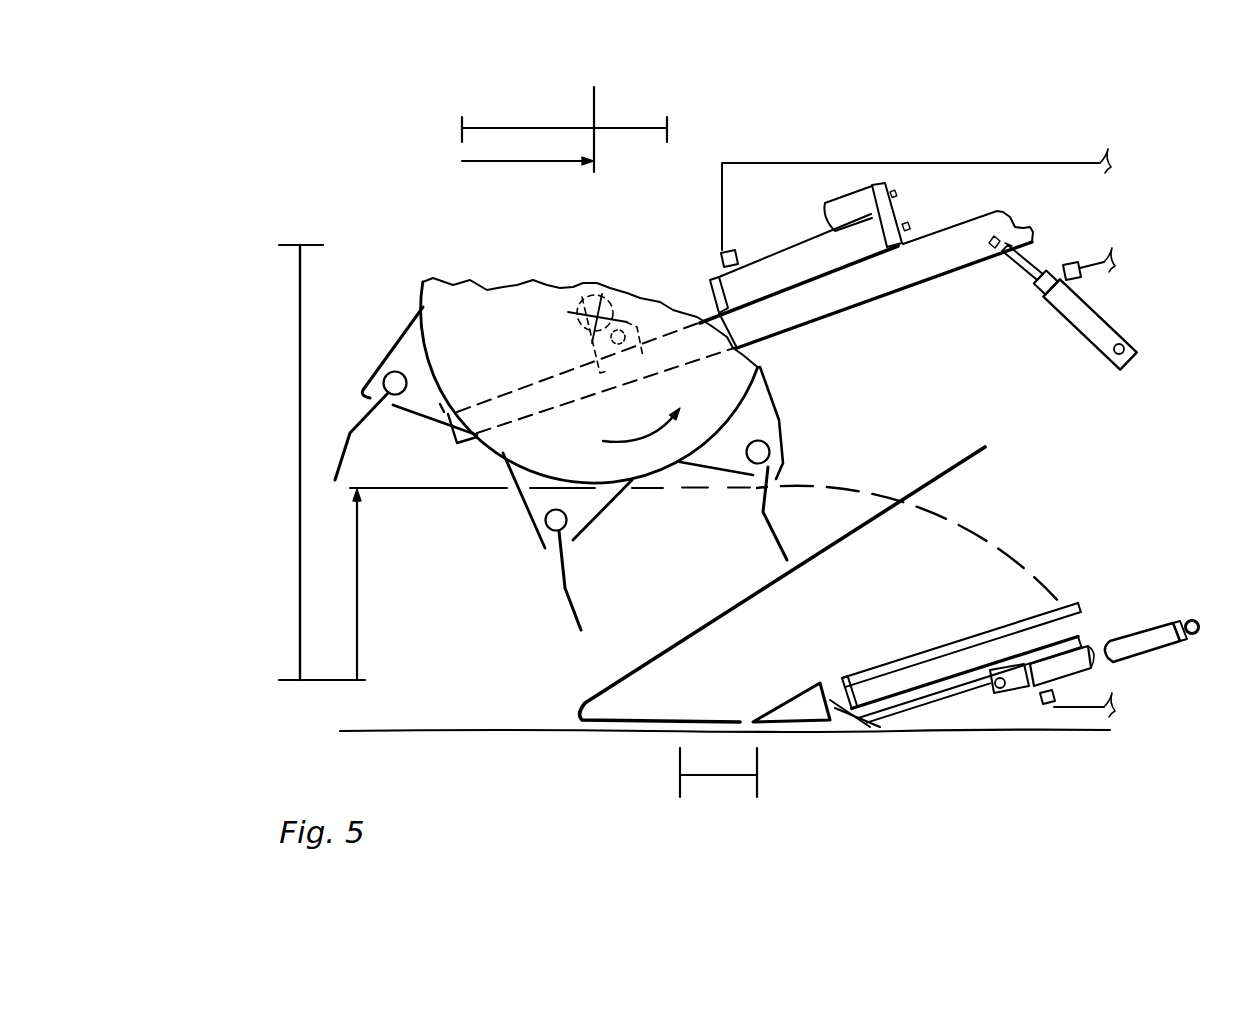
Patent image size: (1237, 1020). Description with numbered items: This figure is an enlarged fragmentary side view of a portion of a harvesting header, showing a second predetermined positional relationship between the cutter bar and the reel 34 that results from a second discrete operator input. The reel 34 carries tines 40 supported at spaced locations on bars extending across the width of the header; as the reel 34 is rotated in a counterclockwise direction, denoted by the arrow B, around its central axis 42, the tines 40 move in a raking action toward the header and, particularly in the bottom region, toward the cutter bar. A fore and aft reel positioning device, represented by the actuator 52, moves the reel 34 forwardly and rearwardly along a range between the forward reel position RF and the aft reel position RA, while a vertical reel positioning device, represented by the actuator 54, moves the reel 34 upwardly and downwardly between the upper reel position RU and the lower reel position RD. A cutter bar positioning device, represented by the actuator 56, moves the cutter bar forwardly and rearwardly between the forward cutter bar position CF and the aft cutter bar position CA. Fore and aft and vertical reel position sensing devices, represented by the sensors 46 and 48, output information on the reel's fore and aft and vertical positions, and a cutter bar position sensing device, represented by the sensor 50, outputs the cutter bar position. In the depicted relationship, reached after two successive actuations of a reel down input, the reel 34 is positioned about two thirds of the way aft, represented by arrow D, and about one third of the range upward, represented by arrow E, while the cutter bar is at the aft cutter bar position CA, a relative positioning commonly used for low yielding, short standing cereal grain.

The reel 34 is at (454, 264).
The tines 40 is at (780, 530).
The central axis 42 is at (572, 311).
The fore and aft reel position sensing device (sensor) 46 is at (1068, 262).
The vertical reel position sensing device (sensor) 48 is at (737, 258).
The cutter bar position sensing device (sensor) 50 is at (1037, 698).
The actuator (fore and aft reel positioning device) 52 is at (827, 257).
The actuator (vertical reel positioning device) 54 is at (1087, 323).
The actuator (cutter bar positioning device) 56 is at (1143, 643).